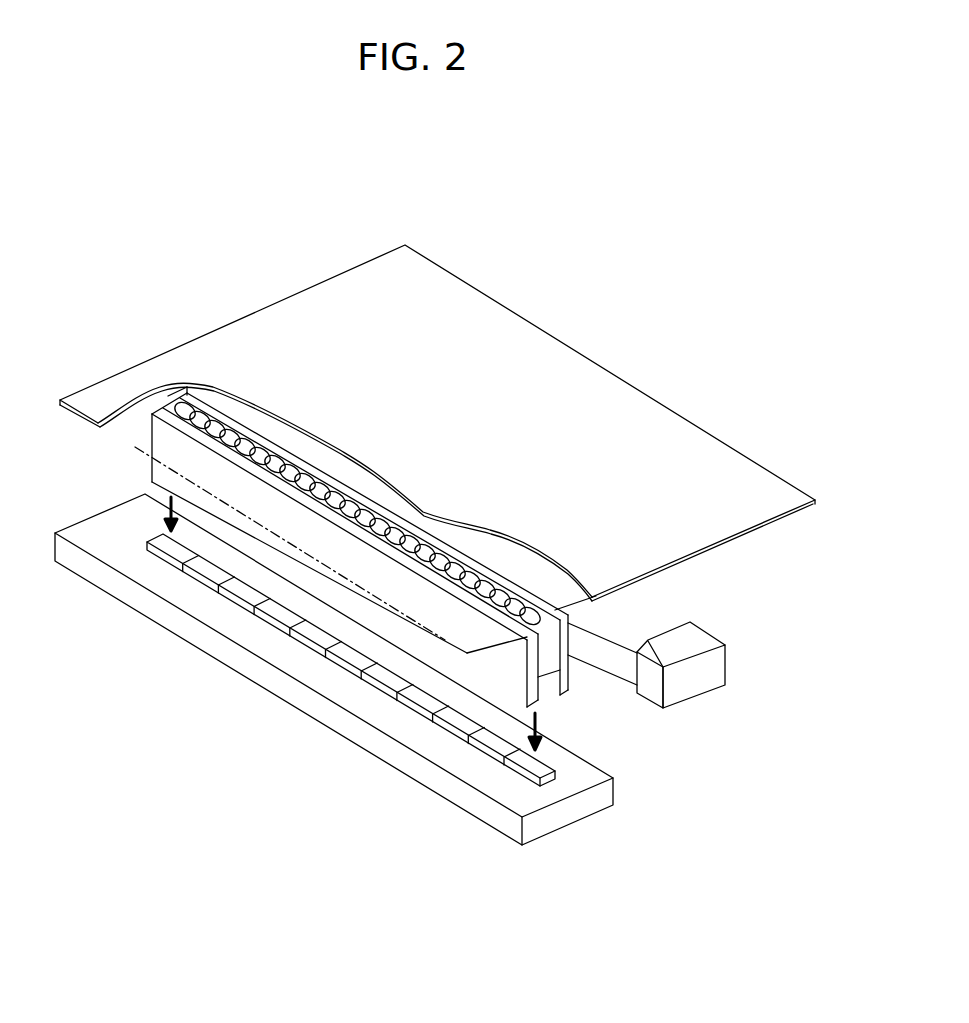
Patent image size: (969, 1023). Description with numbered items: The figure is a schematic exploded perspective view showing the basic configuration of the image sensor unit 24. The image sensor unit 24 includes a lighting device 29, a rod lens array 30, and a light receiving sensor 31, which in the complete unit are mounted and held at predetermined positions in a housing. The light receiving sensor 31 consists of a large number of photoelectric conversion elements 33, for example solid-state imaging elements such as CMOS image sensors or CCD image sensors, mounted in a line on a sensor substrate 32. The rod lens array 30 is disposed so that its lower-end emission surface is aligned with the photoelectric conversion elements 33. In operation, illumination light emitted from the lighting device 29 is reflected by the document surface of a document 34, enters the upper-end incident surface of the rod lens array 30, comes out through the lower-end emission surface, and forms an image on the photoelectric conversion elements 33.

The image sensor unit 24 is at (391, 677).
The lighting device 29 is at (703, 632).
The rod lens array 30 is at (550, 658).
The light receiving sensor 31 is at (608, 762).
The sensor substrate 32 is at (351, 697).
The photoelectric conversion elements 33 is at (492, 740).
The document 34 is at (543, 358).